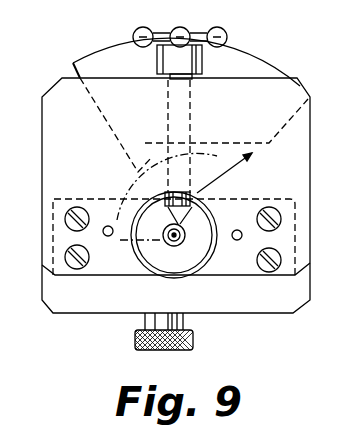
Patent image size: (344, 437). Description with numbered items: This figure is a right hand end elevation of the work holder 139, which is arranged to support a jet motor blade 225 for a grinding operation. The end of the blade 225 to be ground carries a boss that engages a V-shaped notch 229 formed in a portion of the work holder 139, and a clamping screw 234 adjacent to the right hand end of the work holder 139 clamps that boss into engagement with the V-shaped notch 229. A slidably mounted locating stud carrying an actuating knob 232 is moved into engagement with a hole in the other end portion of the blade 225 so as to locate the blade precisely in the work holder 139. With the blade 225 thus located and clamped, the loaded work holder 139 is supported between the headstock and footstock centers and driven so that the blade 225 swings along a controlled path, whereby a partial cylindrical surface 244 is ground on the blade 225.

The work holder 139 is at (300, 86).
The clamping screw 234 is at (230, 46).
The jet motor blade 225 is at (177, 192).
The V-shaped notch 229 is at (200, 208).
The partial cylindrical surface 244 is at (184, 245).
The actuating knob 232 is at (193, 337).